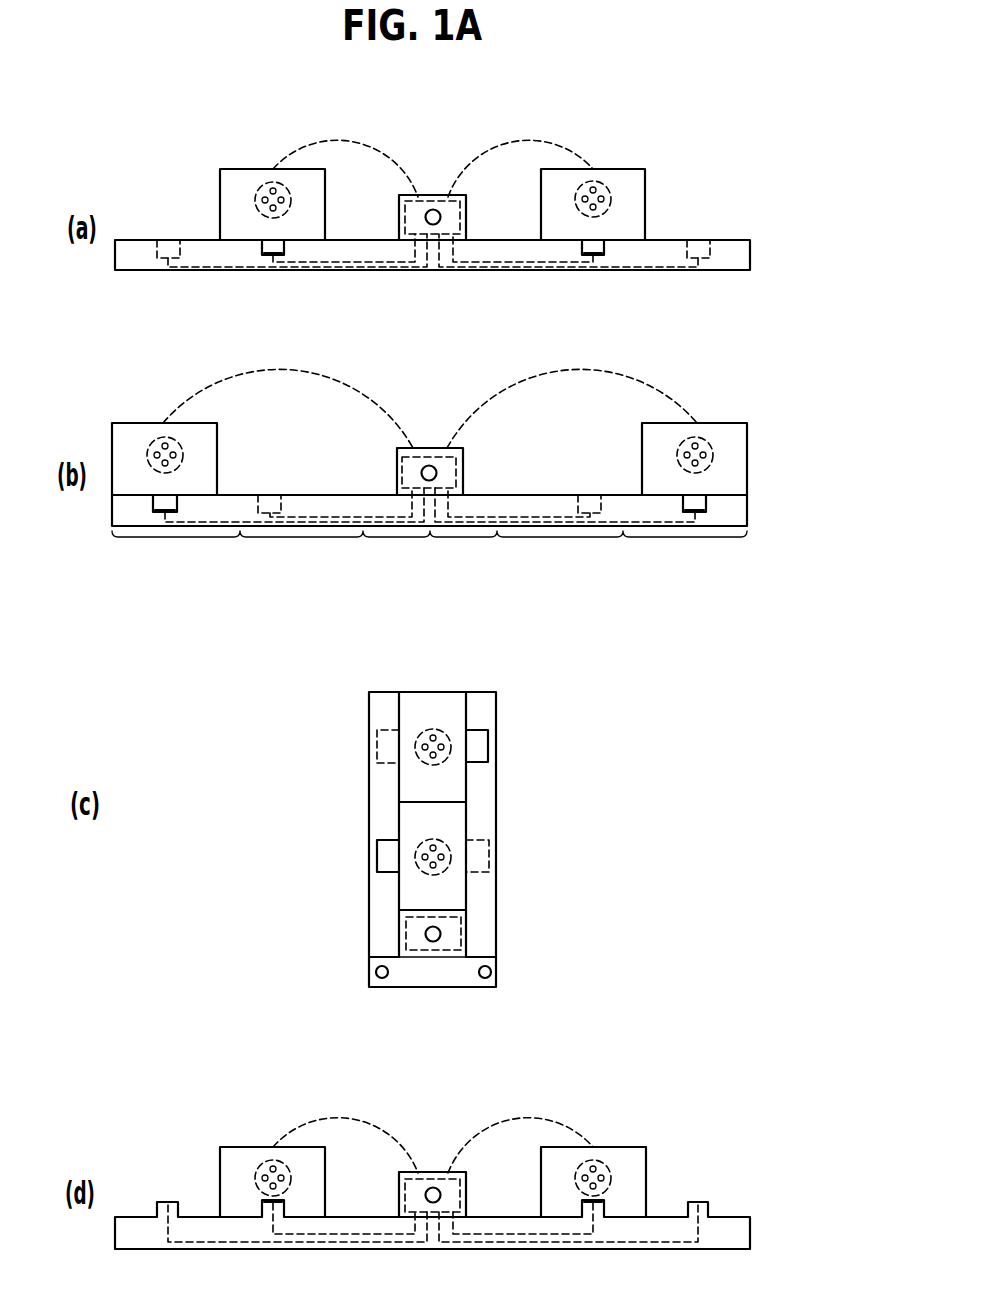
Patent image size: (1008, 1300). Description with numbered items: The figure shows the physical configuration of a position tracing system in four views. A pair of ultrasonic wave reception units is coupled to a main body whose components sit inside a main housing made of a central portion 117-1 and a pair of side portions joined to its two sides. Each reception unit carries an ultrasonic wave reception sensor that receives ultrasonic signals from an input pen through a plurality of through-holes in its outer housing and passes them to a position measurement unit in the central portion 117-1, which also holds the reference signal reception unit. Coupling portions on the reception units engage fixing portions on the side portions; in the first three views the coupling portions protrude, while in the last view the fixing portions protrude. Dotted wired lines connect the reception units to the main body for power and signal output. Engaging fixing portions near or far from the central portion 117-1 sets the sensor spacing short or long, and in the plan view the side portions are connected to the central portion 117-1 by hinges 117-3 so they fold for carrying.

The central portion 117-1 is at (445, 972).
The hinge 117-3 is at (376, 972).